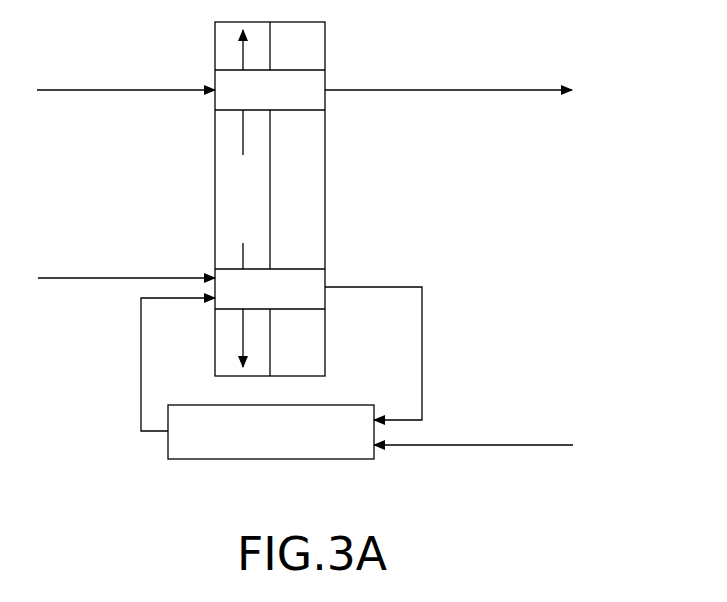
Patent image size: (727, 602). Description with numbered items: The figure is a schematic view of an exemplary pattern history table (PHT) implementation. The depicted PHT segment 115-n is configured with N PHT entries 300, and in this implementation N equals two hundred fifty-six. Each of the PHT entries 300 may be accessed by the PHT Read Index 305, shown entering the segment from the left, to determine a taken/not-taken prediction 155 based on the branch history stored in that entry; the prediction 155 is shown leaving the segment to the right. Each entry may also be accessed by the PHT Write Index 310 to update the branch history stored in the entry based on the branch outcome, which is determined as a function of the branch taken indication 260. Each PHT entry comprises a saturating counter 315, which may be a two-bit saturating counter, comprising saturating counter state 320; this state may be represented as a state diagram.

The PHT segment 115-n is at (326, 38).
The PHT entries 300 is at (229, 182).
The PHT Read Index 305 is at (65, 90).
The PHT Write Index 310 is at (79, 278).
The taken/not-taken prediction 155 is at (481, 91).
The branch taken indication 260 is at (525, 445).
The saturating counter 315 is at (220, 460).
The saturating counter state 320 is at (284, 446).